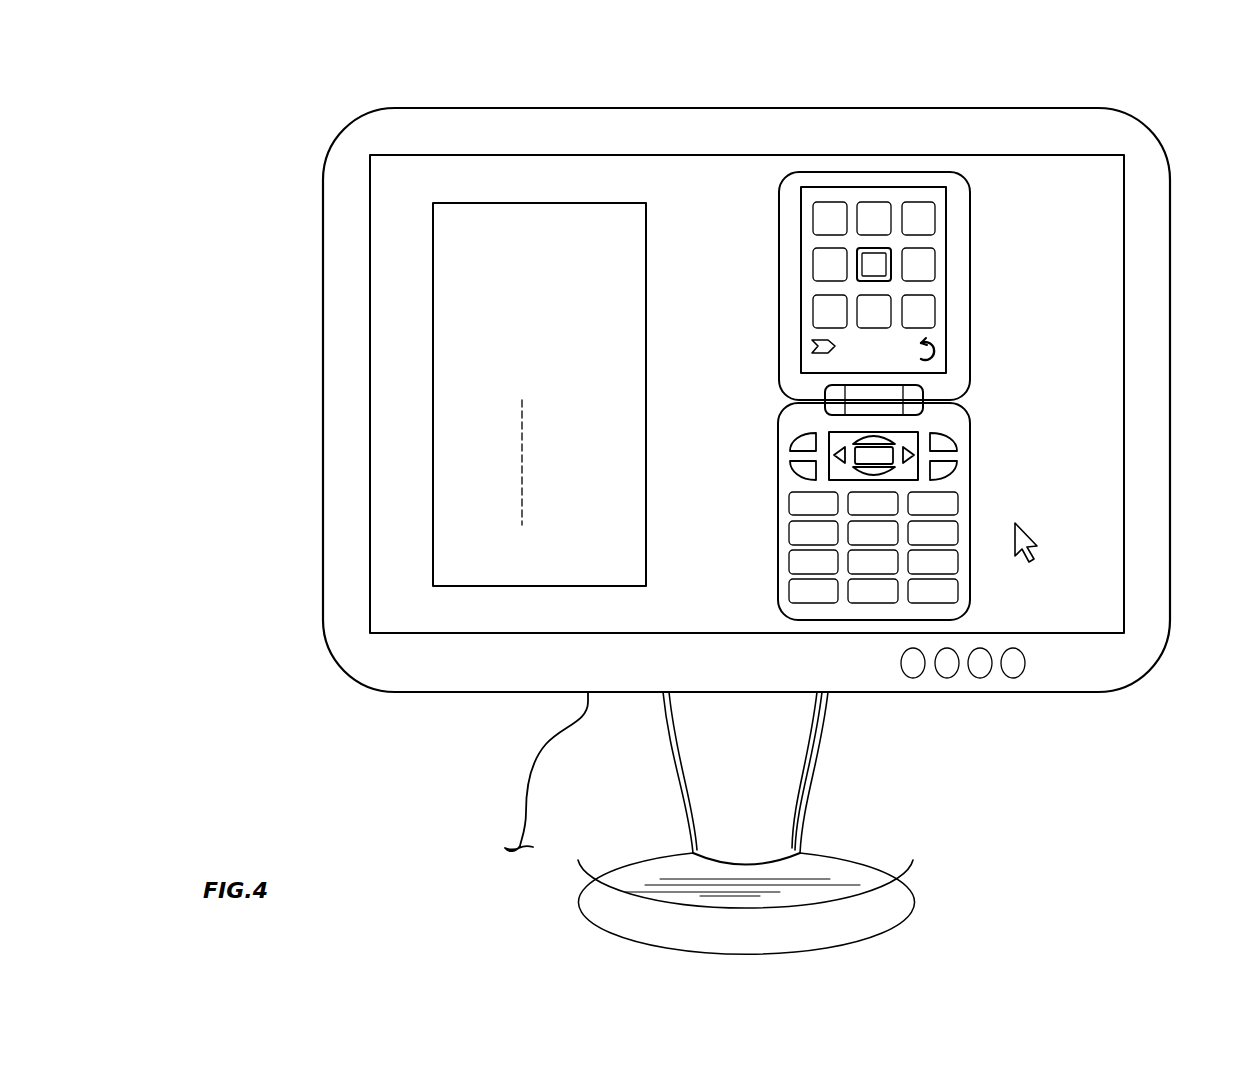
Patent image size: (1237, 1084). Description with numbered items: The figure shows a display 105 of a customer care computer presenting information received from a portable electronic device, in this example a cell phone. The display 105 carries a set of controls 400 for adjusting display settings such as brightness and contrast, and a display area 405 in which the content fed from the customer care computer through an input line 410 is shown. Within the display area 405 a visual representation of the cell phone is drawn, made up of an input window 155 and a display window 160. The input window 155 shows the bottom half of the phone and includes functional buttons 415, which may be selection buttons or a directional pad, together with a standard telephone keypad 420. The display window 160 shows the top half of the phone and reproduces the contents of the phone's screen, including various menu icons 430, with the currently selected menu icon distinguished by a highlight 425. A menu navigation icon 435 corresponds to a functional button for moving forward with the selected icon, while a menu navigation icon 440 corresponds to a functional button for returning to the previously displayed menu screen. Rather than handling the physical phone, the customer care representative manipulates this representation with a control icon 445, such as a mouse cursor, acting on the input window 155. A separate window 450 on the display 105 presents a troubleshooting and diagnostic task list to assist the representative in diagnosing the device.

The display 105 is at (407, 108).
The set of controls 400 is at (912, 705).
The display area 405 is at (489, 622).
The input line 410 is at (517, 800).
The functional buttons 415 is at (768, 480).
The standard telephone keypad 420 is at (768, 602).
The highlight 425 is at (855, 263).
The menu icons 430 is at (826, 305).
The menu navigation icon 435 is at (810, 347).
The menu navigation icon 440 is at (918, 349).
The control icon 445 is at (1036, 550).
The window 450 is at (630, 228).
The input window 155 is at (992, 615).
The display window 160 is at (992, 383).